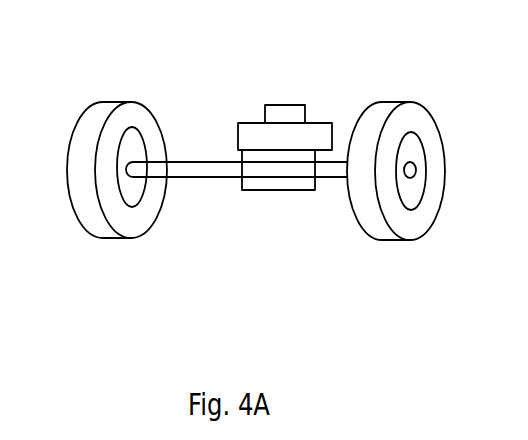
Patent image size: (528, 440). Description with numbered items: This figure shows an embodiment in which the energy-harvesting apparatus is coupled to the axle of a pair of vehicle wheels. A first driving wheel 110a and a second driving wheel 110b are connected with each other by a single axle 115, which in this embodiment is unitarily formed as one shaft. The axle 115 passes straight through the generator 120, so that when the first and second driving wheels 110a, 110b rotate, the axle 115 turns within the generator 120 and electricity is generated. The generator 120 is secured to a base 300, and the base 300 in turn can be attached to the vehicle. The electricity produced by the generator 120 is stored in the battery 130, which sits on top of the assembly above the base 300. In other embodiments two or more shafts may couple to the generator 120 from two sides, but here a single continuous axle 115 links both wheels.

The first driving wheel 110a is at (404, 113).
The second driving wheel 110b is at (113, 107).
The axle 115 is at (241, 170).
The generator 120 is at (259, 185).
The battery 130 is at (283, 111).
The base 300 is at (327, 127).